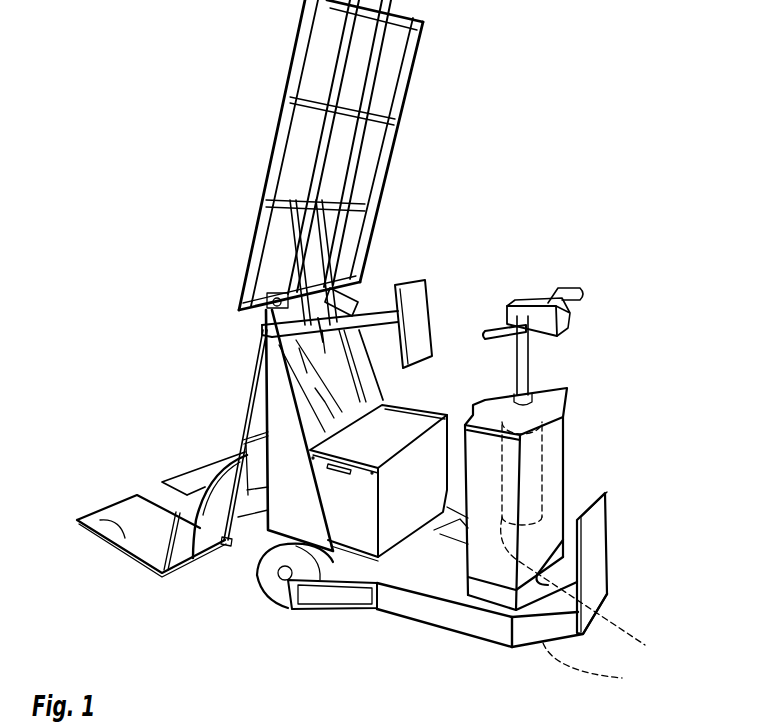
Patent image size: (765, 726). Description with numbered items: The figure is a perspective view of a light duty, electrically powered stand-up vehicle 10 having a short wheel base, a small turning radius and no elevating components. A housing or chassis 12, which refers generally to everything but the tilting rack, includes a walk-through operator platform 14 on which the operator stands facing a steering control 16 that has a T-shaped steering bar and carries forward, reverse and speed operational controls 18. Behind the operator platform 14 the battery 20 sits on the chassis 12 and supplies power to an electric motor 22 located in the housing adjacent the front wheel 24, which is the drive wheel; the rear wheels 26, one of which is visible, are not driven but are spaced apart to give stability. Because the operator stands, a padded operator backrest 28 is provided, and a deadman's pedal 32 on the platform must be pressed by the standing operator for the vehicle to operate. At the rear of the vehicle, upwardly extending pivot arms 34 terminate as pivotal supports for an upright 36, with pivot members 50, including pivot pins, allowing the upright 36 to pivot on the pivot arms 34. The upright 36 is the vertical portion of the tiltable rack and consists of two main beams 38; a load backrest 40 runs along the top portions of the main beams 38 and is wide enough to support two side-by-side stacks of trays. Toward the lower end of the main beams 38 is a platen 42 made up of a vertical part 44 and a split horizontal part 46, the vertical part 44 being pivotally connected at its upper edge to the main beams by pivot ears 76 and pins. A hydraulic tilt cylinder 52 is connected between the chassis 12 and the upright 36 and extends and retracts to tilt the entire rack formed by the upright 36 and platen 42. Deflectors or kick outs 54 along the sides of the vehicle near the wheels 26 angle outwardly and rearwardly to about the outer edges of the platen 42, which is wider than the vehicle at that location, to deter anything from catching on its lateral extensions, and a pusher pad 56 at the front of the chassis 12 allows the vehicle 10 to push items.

The vehicle 10 is at (512, 217).
The housing or chassis 12 is at (493, 627).
The operator platform 14 is at (435, 583).
The steering control 16 is at (524, 368).
The operational controls 18 is at (560, 334).
The battery 20 is at (447, 416).
The electric motor 22 is at (590, 593).
The front wheel 24 is at (600, 669).
The rear wheels 26 is at (273, 580).
The operator backrest 28 is at (414, 330).
The deadman's pedal 32 is at (440, 505).
The pivot arms 34 is at (342, 372).
The upright 36 is at (290, 247).
The main beams 38 is at (286, 277).
The load backrest 40 is at (290, 84).
The platen 42 is at (128, 517).
The vertical part 44 is at (160, 488).
The split horizontal part 46 is at (187, 480).
The pivot members 50 is at (268, 299).
The hydraulic tilt cylinder 52 is at (333, 420).
The deflectors or kick outs 54 is at (337, 598).
The pusher pad 56 is at (590, 562).
The pivot ears 76 is at (197, 550).